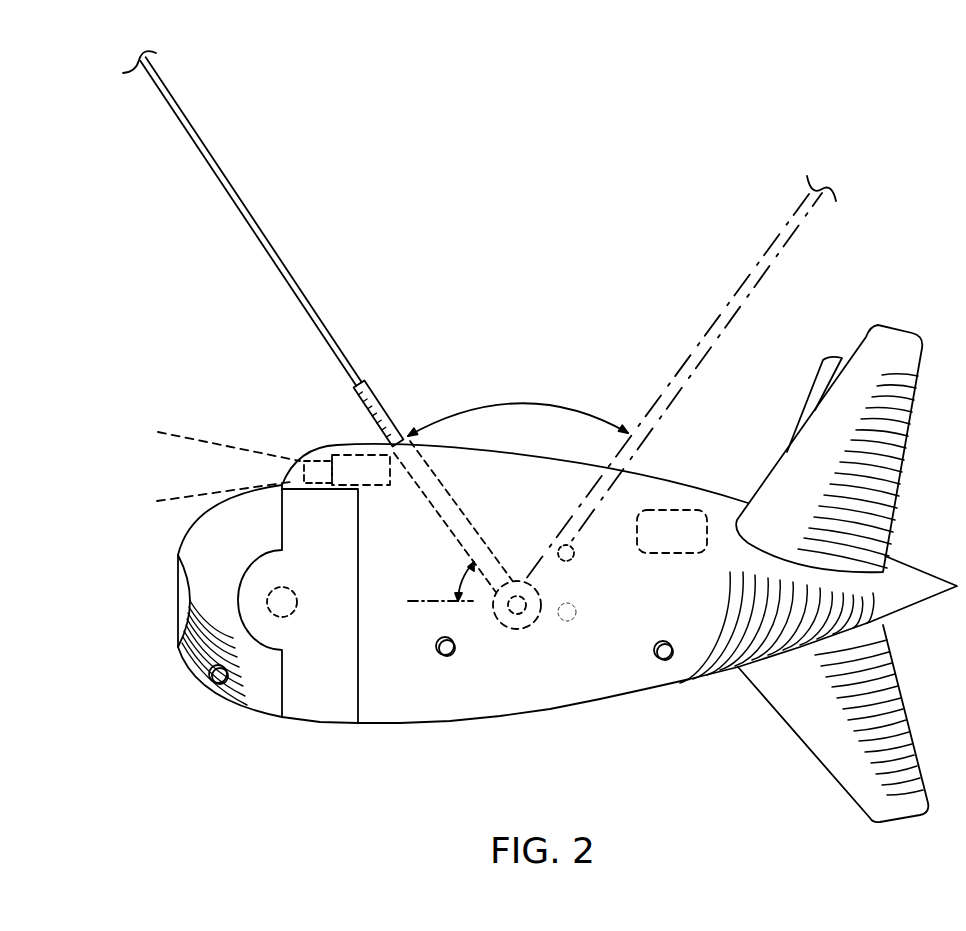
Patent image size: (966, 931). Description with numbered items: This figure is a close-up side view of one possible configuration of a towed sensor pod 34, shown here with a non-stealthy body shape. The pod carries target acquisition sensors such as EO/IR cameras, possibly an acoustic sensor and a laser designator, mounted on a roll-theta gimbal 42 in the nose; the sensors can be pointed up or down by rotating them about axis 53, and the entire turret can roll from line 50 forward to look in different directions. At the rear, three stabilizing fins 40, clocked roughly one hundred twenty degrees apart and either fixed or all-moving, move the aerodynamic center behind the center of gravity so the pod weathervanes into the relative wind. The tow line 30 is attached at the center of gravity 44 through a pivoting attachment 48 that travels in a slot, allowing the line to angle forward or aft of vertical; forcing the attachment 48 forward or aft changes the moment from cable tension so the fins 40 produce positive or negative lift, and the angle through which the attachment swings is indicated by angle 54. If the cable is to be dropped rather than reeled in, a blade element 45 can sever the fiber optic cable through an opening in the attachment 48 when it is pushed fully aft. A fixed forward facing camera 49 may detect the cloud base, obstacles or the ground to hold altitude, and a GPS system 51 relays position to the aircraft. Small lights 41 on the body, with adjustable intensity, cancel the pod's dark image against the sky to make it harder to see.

The tow line 30 is at (179, 114).
The sensor pod 34 is at (592, 704).
The stabilizing fins 40 is at (887, 483).
The lights 41 is at (221, 684).
The roll-theta gimbal 42 is at (198, 660).
The center of gravity 44 is at (527, 598).
The blade element 45 is at (577, 557).
The pivoting attachment 48 is at (387, 411).
The fixed forward facing camera 49 is at (363, 474).
The roll line 50 is at (355, 677).
The GPS system 51 is at (672, 523).
The sensor rotation axis 53 is at (286, 588).
The antenna angle 54 is at (463, 573).